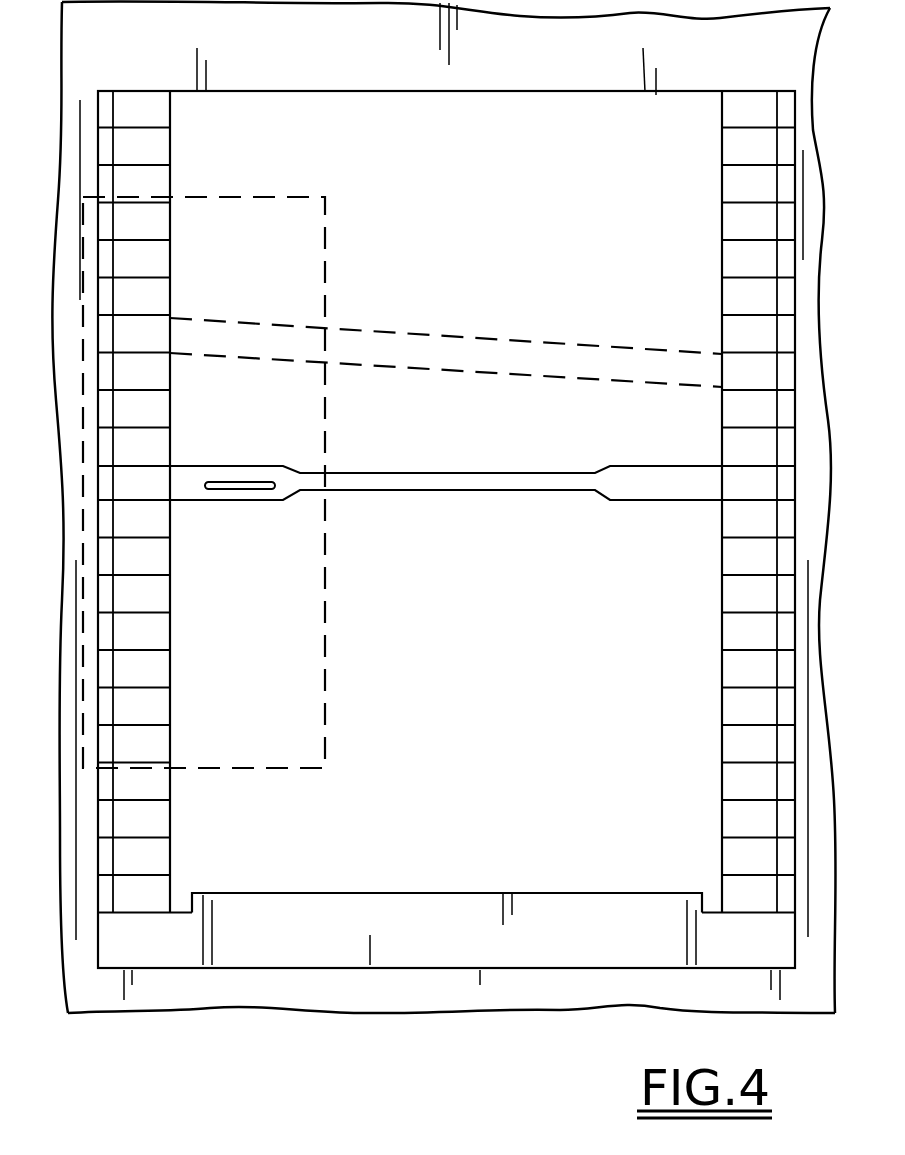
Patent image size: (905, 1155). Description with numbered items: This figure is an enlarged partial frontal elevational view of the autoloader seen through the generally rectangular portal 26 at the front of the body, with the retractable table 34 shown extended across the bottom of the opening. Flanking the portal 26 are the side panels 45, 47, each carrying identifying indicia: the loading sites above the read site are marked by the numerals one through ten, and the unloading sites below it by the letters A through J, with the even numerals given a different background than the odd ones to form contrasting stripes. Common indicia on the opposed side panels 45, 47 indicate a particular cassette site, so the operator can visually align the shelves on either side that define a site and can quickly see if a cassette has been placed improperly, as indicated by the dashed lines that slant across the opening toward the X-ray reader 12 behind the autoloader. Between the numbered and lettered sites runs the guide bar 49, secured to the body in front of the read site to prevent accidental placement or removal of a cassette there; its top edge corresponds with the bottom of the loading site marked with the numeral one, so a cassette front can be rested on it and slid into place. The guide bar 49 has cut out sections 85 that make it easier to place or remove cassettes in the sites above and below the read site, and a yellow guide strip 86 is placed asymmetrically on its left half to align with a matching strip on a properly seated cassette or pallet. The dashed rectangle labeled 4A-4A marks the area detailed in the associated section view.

The X-ray reader 12 is at (367, 330).
The portal 26 is at (516, 315).
The retractable table 34 is at (555, 900).
The side panel 45 is at (171, 302).
The side panel 47 is at (722, 287).
The guide bar 49 is at (446, 475).
The cut out sections 85 is at (445, 473).
The guide strip 86 is at (233, 484).
The section line 4A-4A is at (325, 648).